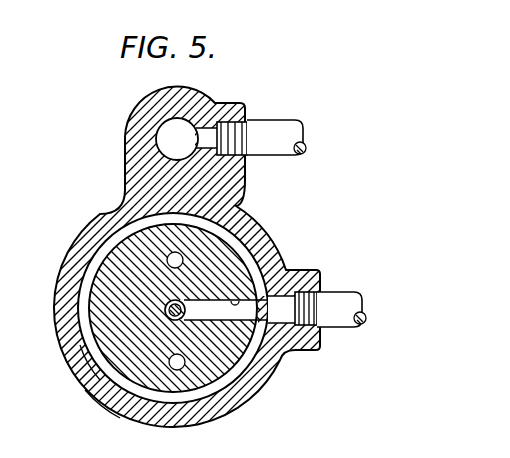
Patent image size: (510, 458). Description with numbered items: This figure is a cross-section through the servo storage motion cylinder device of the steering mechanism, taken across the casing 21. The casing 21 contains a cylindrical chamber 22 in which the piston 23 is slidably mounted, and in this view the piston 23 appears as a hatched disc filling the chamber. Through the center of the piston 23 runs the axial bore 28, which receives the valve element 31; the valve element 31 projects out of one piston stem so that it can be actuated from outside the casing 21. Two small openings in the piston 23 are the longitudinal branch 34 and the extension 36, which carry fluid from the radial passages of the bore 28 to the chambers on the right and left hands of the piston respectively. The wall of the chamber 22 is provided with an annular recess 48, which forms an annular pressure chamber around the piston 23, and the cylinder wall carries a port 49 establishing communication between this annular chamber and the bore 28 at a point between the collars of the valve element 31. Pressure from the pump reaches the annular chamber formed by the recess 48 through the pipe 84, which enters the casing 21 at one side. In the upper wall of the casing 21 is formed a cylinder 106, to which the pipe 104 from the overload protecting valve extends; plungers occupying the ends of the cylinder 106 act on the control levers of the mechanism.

The casing 21 is at (104, 225).
The cylindrical chamber 22 is at (78, 352).
The piston 23 is at (217, 378).
The axial bore 28 is at (110, 405).
The valve element 31 is at (163, 308).
The longitudinal branch 34 is at (177, 364).
The extension 36 is at (176, 259).
The annular recess 48 is at (79, 298).
The port 49 is at (260, 298).
The pipe 84 is at (362, 311).
The pipe 104 is at (283, 128).
The cylinder 106 is at (164, 134).